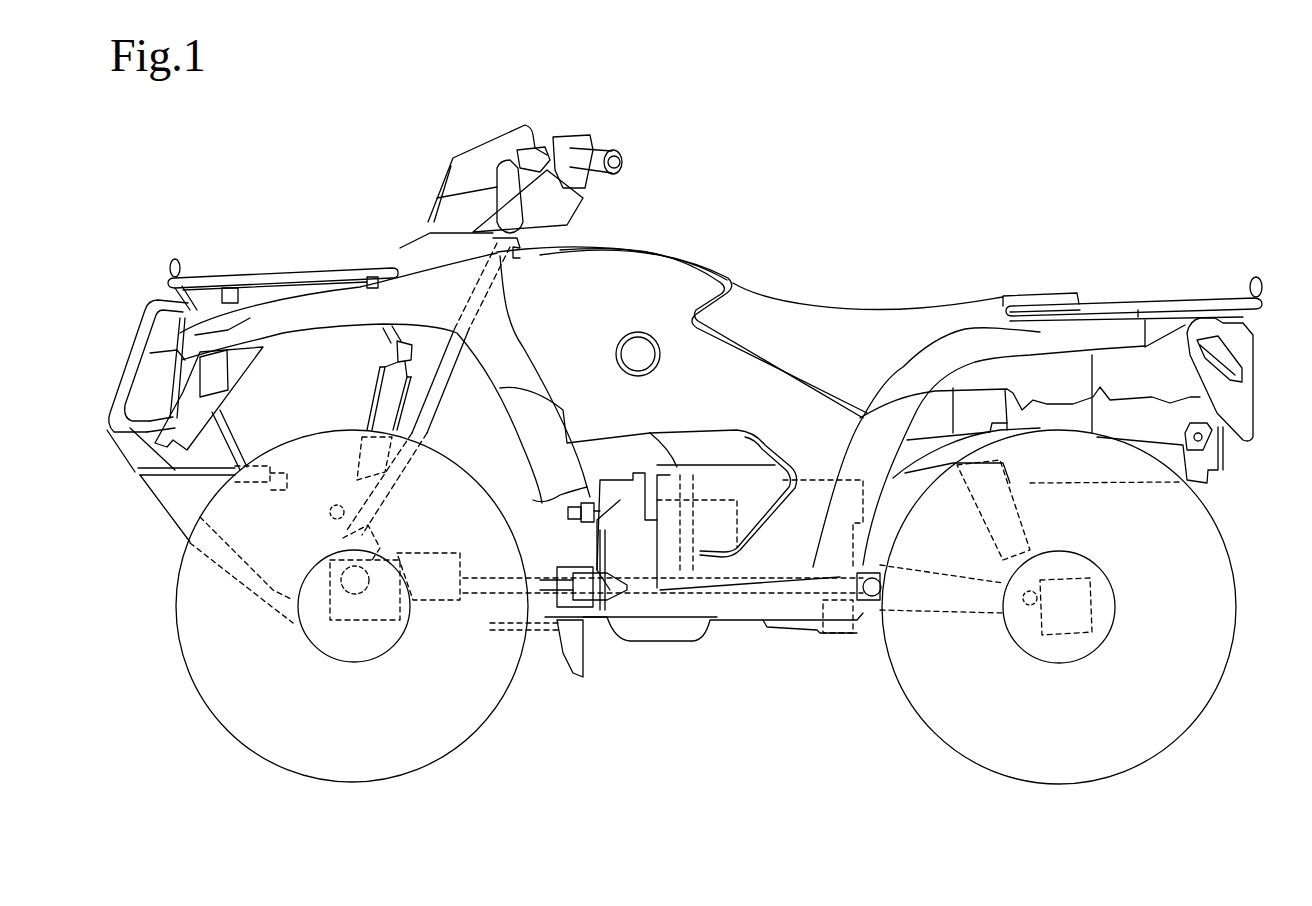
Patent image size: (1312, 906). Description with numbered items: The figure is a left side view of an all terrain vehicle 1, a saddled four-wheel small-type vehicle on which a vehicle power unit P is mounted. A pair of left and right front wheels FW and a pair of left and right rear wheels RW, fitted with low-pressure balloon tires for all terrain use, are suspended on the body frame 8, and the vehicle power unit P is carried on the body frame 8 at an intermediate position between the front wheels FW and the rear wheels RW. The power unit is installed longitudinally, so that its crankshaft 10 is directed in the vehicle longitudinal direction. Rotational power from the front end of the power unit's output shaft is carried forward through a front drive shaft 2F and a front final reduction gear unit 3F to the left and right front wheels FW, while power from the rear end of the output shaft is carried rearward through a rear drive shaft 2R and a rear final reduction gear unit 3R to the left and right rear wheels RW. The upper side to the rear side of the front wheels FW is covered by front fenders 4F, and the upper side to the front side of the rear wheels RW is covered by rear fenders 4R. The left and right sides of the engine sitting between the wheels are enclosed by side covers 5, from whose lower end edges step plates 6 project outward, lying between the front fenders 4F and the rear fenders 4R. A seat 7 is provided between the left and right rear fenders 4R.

The all terrain vehicle 1 is at (771, 215).
The front drive shaft 2F is at (480, 593).
The rear drive shaft 2R is at (923, 607).
The front final reduction gear unit 3F is at (370, 617).
The rear final reduction gear unit 3R is at (1050, 633).
The front fender 4F is at (342, 313).
The rear fender 4R is at (945, 353).
The side cover 5 is at (708, 392).
The step plate 6 is at (697, 603).
The seat 7 is at (872, 308).
The body frame 8 is at (495, 623).
The crankshaft 10 is at (1003, 300).
The vehicle power unit P is at (700, 547).
The front wheel FW is at (178, 625).
The rear wheel RW is at (1236, 577).